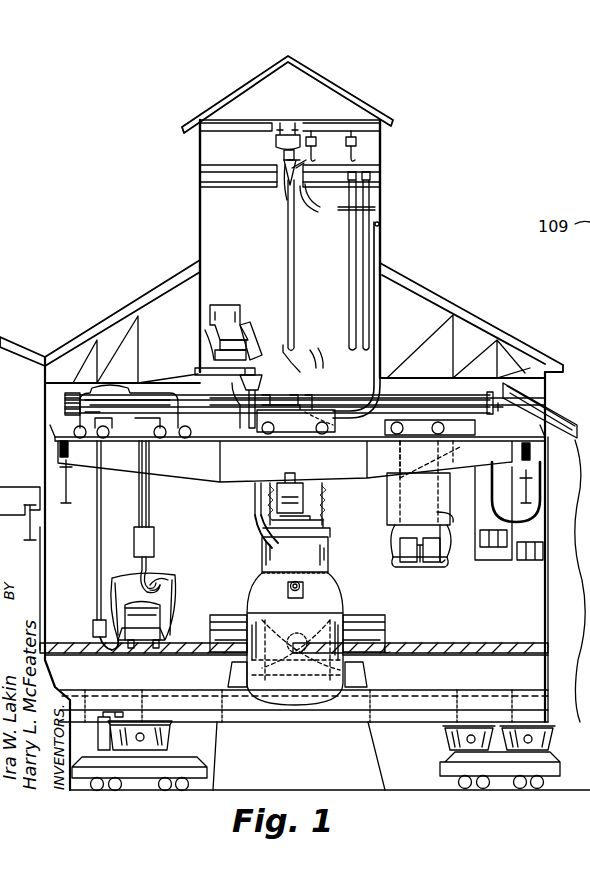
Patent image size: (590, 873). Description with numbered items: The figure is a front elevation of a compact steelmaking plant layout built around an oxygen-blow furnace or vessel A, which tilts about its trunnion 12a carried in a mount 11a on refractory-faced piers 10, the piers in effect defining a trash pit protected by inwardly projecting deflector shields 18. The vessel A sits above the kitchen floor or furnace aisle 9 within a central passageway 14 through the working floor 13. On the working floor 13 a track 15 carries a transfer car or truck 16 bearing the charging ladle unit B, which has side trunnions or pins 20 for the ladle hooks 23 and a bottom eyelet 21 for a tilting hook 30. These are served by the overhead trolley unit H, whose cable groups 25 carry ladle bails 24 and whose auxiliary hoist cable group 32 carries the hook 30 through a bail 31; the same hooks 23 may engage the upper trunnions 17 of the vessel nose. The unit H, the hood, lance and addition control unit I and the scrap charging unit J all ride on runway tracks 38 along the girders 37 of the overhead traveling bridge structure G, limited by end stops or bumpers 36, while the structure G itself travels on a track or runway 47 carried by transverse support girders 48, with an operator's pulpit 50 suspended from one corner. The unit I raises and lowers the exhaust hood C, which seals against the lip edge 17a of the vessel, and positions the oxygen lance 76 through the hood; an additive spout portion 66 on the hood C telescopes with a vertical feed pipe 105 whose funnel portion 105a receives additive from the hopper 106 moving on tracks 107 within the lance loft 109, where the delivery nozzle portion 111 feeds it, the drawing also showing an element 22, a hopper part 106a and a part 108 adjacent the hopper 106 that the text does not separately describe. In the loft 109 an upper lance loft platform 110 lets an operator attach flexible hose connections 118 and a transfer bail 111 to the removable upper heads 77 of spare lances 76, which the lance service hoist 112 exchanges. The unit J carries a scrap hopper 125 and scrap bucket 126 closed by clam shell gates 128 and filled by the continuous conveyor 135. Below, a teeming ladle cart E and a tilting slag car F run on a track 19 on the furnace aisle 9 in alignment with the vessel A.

The kitchen floor or furnace aisle 9 is at (405, 790).
The refractory-faced piers 10 is at (218, 748).
The trunnion mount 11a is at (252, 600).
The trunnion 12a is at (345, 612).
The working floor 13 is at (108, 658).
The central passageway 14 is at (385, 640).
The track 15 is at (162, 644).
The transfer car or truck 16 is at (162, 618).
The upper trunnions 17 is at (303, 590).
The lip edge 17a is at (330, 570).
The deflector shields 18 is at (436, 680).
The track 19 is at (252, 792).
The side trunnions or pins 20 is at (165, 585).
The bottom eyelet 21 is at (120, 600).
The support plate 22 is at (196, 372).
The ladle hooks 23 is at (147, 565).
The ladle bails 24 is at (154, 532).
The cable groups 25 is at (139, 487).
The tilting hook 30 is at (100, 637).
The bail 31 is at (93, 625).
The auxiliary hoist cable group 32 is at (96, 533).
The end stops or bumpers 36 is at (50, 430).
The girders 37 is at (200, 480).
The runway tracks 38 is at (510, 445).
The track or runway 47 is at (60, 465).
The transverse support girders 48 is at (556, 493).
The operator's pulpit 50 is at (478, 560).
The additive spout portion 66 is at (256, 530).
The oxygen lance 76 is at (296, 244).
The removable upper heads 77 is at (286, 168).
The vertical feed or delivery pipe 105 is at (256, 498).
The funnel portion 105a is at (229, 406).
The additive hopper 106 is at (238, 305).
The hopper spout 106a is at (258, 345).
The tracks 107 is at (212, 352).
The feeder tube 108 is at (208, 332).
The building enclosure or lance loft 109 is at (198, 212).
The upper lance loft platform 110 is at (205, 175).
The transfer bail 111 is at (286, 192).
The lance service hoist 112 is at (276, 150).
The flexible hose connections 118 is at (312, 375).
The scrap box or hopper 125 is at (432, 502).
The scrap bucket 126 is at (432, 555).
The clam shell gates 128 is at (408, 562).
The continuous conveyor 135 is at (545, 393).
The furnace or vessel A is at (278, 639).
The charging ladle unit B is at (150, 599).
The exhaust hood C is at (296, 544).
The teeming ladle cart or truck unit E is at (172, 735).
The tilting slag car unit F is at (445, 735).
The overhead traveling bridge frame or girder structure G is at (348, 485).
The overhead trolley unit H is at (127, 395).
The hood, lance and addition control unit I is at (296, 398).
The scrap charging unit or trolley J is at (428, 432).